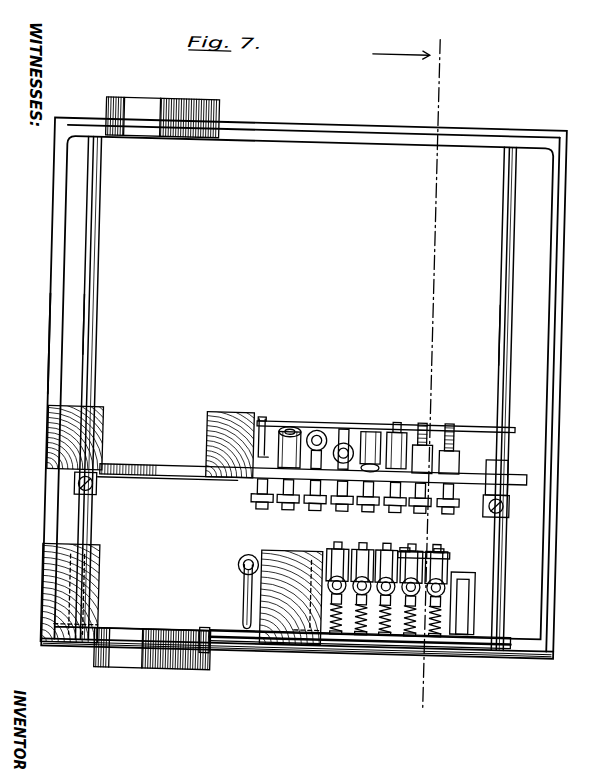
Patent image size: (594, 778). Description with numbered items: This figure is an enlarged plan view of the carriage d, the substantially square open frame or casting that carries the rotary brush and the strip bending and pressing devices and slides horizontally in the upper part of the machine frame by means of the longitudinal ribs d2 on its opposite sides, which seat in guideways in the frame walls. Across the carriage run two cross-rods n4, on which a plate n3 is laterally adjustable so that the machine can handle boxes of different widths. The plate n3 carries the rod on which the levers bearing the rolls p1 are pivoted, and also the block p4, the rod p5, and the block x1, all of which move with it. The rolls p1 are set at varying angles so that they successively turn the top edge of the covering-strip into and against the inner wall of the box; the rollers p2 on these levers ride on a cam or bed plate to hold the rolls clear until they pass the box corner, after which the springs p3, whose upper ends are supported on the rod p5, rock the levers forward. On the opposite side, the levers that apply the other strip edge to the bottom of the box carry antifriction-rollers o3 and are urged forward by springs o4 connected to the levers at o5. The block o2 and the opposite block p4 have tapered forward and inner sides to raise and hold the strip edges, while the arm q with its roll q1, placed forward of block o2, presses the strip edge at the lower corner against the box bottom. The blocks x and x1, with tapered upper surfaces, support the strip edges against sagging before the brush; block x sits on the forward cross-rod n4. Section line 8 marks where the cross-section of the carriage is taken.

The carriage d is at (48, 347).
The longitudinal ribs d2 is at (333, 129).
The plate n3 is at (106, 633).
The cross-rods n4 is at (95, 335).
The block x is at (47, 587).
The block x1 is at (50, 444).
The rolls p1 is at (291, 427).
The rollers p2 is at (286, 500).
The springs p3 is at (319, 430).
The block p4 is at (224, 430).
The rod p5 is at (263, 420).
The arm q is at (249, 581).
The roll q1 is at (243, 566).
The block o2 is at (296, 632).
The antifriction-roller o3 is at (452, 552).
The springs o4 is at (406, 634).
The spring connection o5 is at (352, 632).
The section line 8 is at (400, 372).